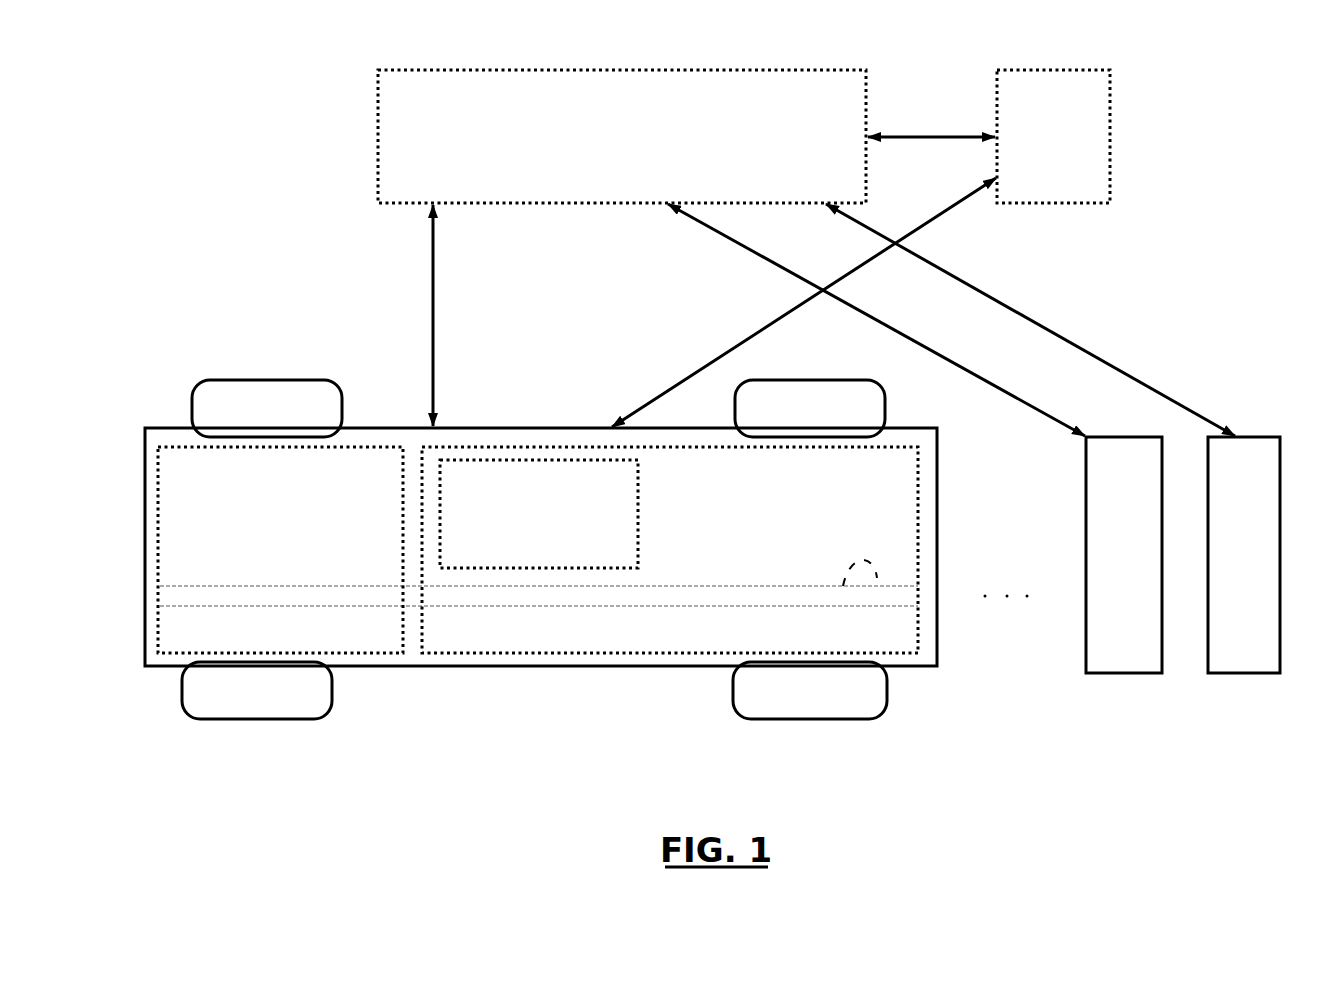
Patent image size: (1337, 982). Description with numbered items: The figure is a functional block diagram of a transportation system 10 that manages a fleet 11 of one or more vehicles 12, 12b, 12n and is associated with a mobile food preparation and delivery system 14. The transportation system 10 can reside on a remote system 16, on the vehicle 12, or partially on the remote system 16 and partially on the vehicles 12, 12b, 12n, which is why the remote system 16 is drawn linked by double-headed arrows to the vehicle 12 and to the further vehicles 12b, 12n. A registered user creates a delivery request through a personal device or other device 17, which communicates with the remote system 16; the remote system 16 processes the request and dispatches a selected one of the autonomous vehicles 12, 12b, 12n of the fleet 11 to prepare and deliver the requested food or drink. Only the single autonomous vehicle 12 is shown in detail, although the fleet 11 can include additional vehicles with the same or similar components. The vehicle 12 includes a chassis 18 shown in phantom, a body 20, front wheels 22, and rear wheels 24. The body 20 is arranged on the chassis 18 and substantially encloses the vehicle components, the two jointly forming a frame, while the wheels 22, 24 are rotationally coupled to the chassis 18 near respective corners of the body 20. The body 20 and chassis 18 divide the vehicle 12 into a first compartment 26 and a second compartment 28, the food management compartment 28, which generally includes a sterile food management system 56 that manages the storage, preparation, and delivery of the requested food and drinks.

The transportation system 10 is at (178, 153).
The fleet 11 is at (1120, 264).
The autonomous vehicle 12 is at (457, 427).
The vehicle 12b is at (1094, 436).
The vehicle 12n is at (1238, 436).
The mobile food preparation and delivery system 14 is at (265, 252).
The remote system 16 is at (612, 158).
The other device 17 is at (1043, 172).
The chassis 18 is at (869, 569).
The body 20 is at (938, 490).
The front wheels 22 is at (218, 379).
The rear wheels 24 is at (810, 379).
The first compartment 26 is at (270, 552).
The food management compartment 28 is at (670, 554).
The sterile food management system 56 is at (529, 561).